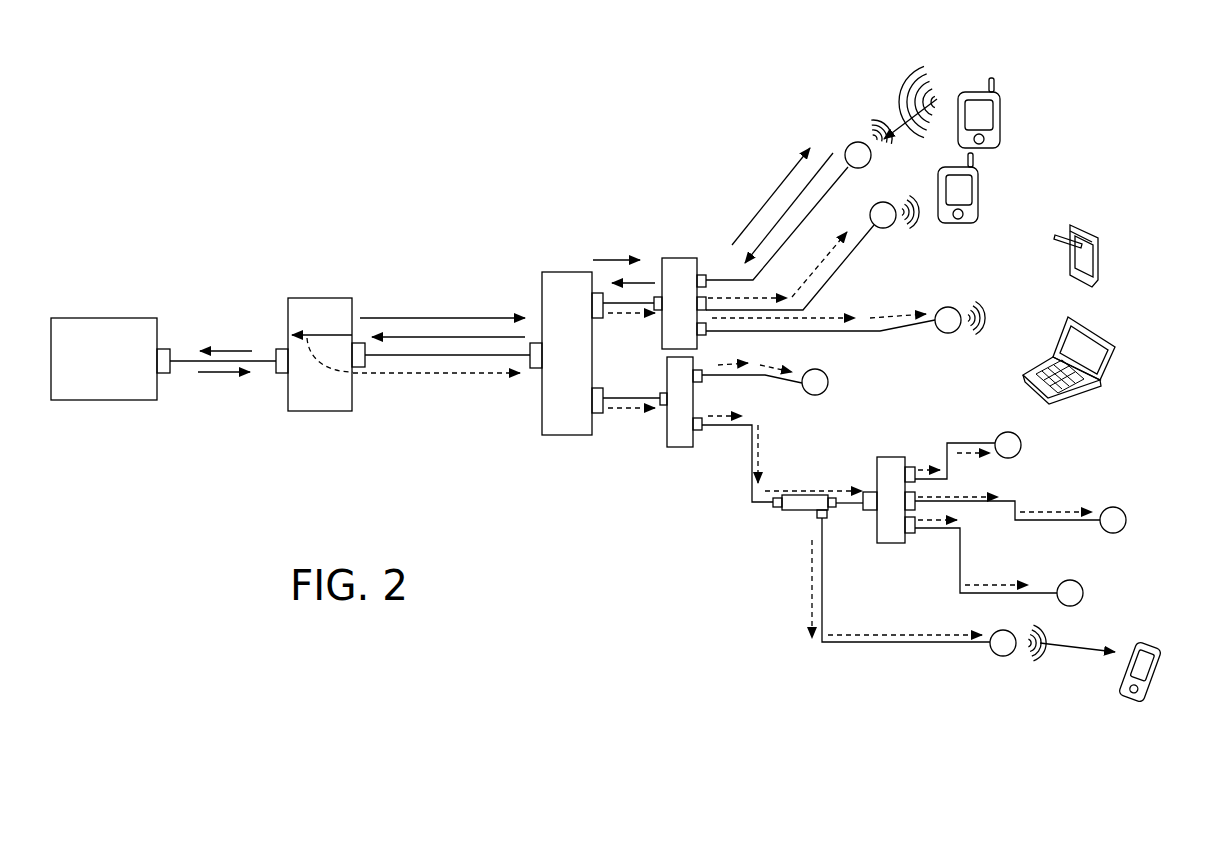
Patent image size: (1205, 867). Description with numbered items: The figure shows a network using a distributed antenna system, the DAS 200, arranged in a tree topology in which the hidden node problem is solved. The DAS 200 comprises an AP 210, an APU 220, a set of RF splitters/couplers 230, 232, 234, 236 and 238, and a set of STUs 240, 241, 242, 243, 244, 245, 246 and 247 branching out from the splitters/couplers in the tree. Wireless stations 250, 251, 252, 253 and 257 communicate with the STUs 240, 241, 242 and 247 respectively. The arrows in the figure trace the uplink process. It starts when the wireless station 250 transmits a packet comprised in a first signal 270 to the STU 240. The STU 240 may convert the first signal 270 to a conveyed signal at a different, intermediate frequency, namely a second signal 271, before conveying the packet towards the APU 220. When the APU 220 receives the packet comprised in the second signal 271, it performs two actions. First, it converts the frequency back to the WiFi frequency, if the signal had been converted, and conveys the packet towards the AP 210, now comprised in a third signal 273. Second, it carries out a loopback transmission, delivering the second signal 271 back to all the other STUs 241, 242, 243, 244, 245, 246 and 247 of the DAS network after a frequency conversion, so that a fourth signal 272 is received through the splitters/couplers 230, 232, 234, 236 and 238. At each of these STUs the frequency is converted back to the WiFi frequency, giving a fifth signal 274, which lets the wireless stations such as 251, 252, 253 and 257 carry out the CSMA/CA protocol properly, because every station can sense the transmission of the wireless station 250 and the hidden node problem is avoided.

The DAS 200 is at (475, 108).
The AP 210 is at (94, 318).
The APU 220 is at (320, 298).
The RF splitter/coupler 230 is at (543, 438).
The RF splitter/coupler 232 is at (637, 278).
The RF splitter/coupler 234 is at (669, 450).
The RF splitter/coupler 236 is at (785, 513).
The RF splitter/coupler 238 is at (895, 545).
The STU 240 is at (848, 143).
The STU 241 is at (875, 231).
The STU 242 is at (950, 303).
The STU 243 is at (820, 398).
The STU 244 is at (1022, 445).
The STU 245 is at (1127, 520).
The STU 246 is at (1065, 580).
The STU 247 is at (990, 650).
The wireless station 250 is at (1002, 123).
The wireless station 251 is at (982, 195).
The wireless station 252 is at (1083, 223).
The wireless station 253 is at (1100, 332).
The wireless station 257 is at (1122, 663).
The first signal 270 is at (902, 120).
The second signal 271 is at (460, 355).
The fourth signal 272 is at (425, 375).
The third signal 273 is at (223, 350).
The fifth signal 274 is at (1068, 650).